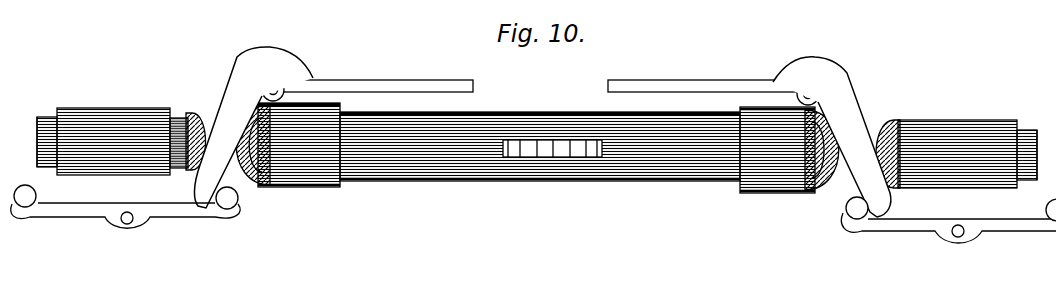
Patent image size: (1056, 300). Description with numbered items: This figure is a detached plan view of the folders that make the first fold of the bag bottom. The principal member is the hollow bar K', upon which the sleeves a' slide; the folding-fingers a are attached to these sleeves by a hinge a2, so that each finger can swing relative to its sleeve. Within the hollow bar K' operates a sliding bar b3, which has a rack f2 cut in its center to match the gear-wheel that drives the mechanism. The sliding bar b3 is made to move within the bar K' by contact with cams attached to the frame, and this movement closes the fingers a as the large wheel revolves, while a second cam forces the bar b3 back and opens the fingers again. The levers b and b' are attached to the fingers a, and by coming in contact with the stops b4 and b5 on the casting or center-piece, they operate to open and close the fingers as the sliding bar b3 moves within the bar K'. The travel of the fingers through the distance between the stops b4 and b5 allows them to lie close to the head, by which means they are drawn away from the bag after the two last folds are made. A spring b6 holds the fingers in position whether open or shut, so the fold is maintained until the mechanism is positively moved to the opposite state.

The folding-fingers a is at (541, 74).
The sleeve a' is at (537, 148).
The hinge a2 is at (285, 78).
The lever b is at (253, 127).
The lever b' is at (832, 137).
The sliding bar b3 is at (530, 148).
The stop b4 is at (529, 199).
The stop b5 is at (238, 198).
The spring b6 is at (916, 232).
The rack f2 is at (552, 175).
The bar K' is at (537, 148).